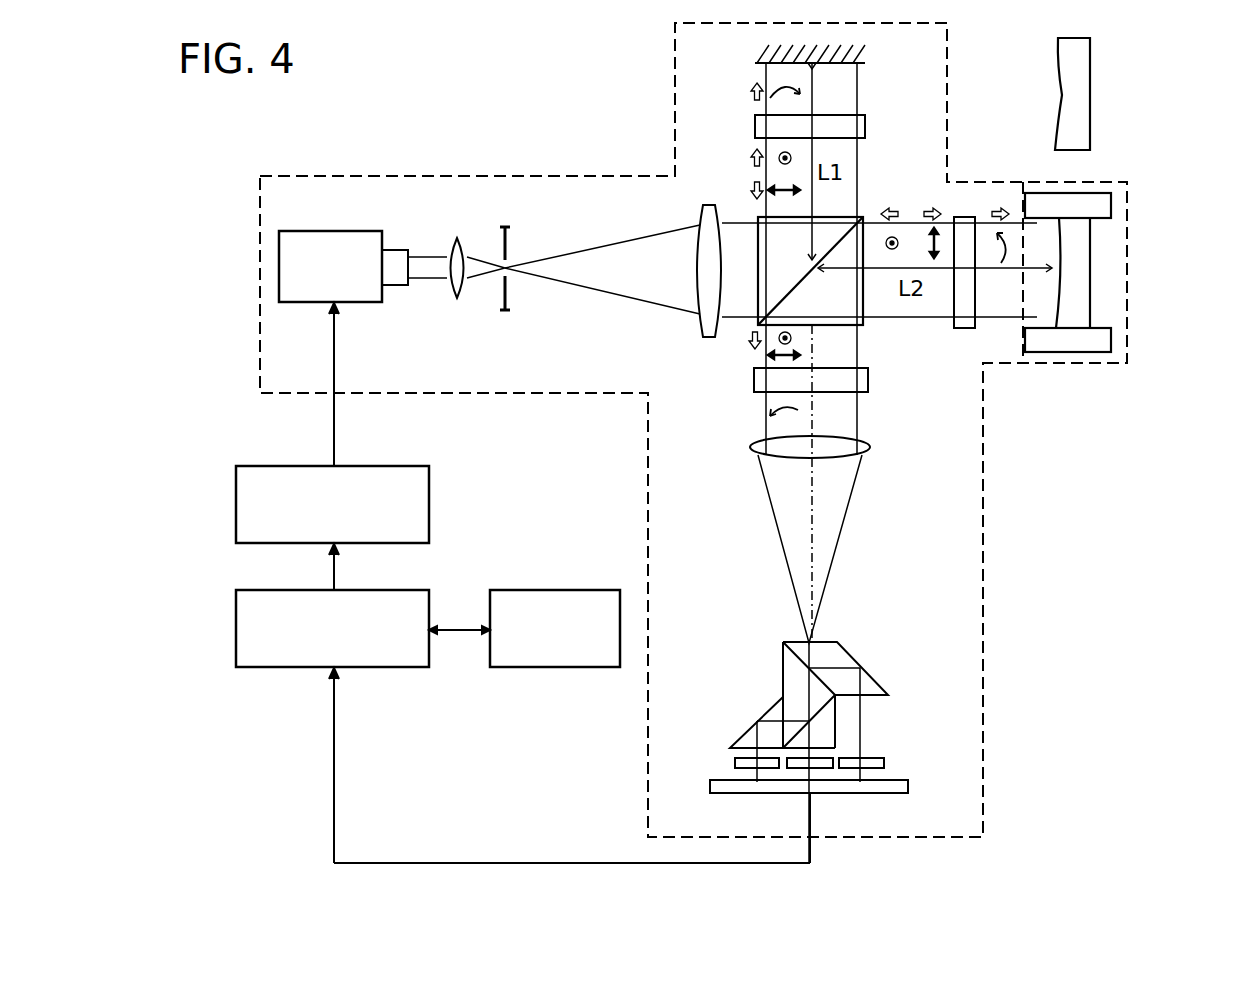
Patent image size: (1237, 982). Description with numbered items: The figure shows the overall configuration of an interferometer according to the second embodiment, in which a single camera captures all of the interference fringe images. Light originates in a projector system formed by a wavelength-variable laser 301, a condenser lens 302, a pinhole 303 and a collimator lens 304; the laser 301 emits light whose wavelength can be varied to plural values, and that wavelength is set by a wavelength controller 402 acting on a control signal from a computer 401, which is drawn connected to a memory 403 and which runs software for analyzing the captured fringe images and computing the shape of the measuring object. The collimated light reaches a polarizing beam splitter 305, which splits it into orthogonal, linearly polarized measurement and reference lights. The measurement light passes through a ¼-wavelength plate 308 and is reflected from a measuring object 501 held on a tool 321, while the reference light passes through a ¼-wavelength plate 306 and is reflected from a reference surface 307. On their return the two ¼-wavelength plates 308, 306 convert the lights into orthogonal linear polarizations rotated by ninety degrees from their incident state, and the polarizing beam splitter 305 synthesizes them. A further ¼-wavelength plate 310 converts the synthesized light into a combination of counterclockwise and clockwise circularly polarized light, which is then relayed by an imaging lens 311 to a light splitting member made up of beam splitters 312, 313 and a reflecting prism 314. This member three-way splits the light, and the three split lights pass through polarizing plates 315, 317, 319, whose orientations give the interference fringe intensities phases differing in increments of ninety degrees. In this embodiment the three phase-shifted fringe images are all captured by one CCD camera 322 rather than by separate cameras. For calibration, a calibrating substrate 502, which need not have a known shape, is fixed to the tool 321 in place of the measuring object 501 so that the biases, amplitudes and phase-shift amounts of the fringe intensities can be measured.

The wavelength-variable laser 301 is at (300, 303).
The condenser lens 302 is at (456, 300).
The pinhole 303 is at (519, 276).
The collimator lens 304 is at (708, 204).
The polarizing beam splitter 305 is at (865, 327).
The ¼-wavelength plate 306 is at (866, 126).
The reference surface 307 is at (838, 65).
The ¼-wavelength plate 308 is at (966, 329).
The ¼-wavelength plate 310 is at (753, 380).
The imaging lens 311 is at (750, 447).
The beam splitter 312 is at (787, 660).
The beam splitter 313 is at (830, 714).
The reflecting prism 314 is at (768, 708).
The polarizing plate 315 is at (884, 763).
The polarizing plate 317 is at (820, 770).
The polarizing plate 319 is at (735, 763).
The tool 321 is at (1073, 353).
The CCD camera 322 is at (908, 787).
The computer 401 is at (236, 627).
The wavelength controller 402 is at (236, 507).
The memory 403 is at (559, 589).
The measuring object 501 is at (1091, 271).
The calibrating substrate 502 is at (1091, 95).